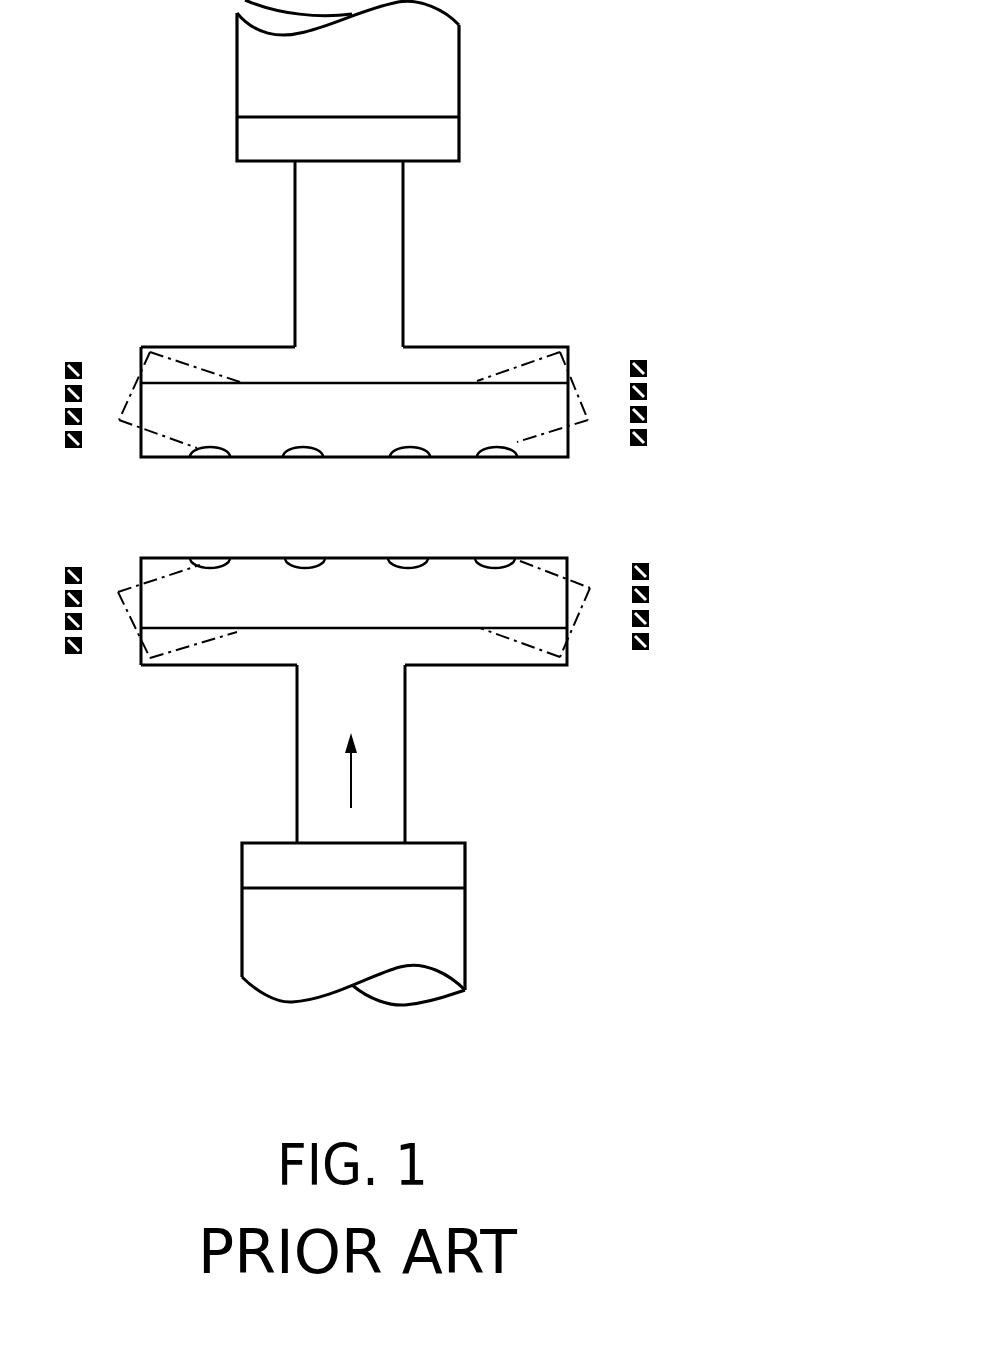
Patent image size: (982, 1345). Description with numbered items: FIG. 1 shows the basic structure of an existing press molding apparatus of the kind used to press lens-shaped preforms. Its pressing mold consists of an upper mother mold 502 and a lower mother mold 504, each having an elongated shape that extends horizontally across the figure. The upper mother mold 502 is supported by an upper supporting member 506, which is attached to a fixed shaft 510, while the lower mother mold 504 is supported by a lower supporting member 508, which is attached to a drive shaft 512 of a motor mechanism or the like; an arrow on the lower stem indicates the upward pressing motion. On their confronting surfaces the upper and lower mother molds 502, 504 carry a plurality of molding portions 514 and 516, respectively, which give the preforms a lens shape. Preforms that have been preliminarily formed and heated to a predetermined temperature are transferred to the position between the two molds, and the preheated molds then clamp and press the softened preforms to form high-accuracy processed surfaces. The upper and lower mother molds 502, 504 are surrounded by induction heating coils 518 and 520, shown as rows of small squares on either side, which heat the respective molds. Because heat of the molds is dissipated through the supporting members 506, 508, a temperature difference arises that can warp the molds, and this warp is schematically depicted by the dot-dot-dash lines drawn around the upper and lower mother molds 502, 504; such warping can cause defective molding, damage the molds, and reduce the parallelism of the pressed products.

The upper mother mold 502 is at (547, 458).
The lower mother mold 504 is at (535, 558).
The upper supporting member 506 is at (425, 365).
The lower supporting member 508 is at (433, 642).
The fixed shaft 510 is at (460, 70).
The drive shaft 512 is at (465, 925).
The molding portions 514 is at (300, 455).
The molding portions 516 is at (307, 560).
The induction heating coil 518 is at (647, 367).
The induction heating coil 520 is at (648, 595).